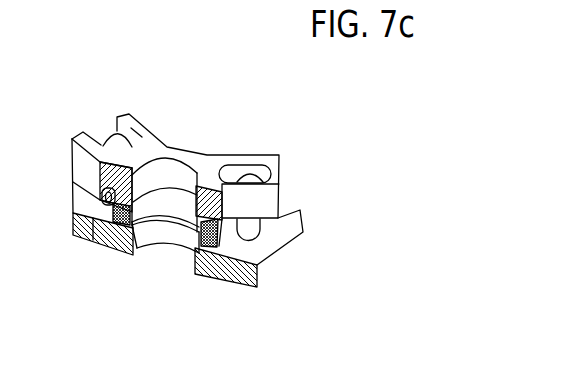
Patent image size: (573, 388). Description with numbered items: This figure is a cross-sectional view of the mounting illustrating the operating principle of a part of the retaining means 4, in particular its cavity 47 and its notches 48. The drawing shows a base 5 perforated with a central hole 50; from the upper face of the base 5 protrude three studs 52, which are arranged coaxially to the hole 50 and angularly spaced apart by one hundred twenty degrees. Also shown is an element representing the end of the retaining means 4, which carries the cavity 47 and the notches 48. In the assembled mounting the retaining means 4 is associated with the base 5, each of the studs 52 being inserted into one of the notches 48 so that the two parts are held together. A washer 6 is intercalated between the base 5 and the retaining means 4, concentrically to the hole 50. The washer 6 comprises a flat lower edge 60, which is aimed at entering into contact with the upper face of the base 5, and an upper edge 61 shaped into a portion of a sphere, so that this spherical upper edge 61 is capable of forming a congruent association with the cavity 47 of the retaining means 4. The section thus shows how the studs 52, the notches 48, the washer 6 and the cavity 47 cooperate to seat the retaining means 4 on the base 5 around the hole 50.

The retaining means 4 is at (197, 112).
The base 5 is at (294, 236).
The washer 6 is at (153, 205).
The cavity 47 is at (136, 251).
The notches 48 is at (258, 168).
The central hole 50 is at (173, 270).
The studs 52 is at (248, 230).
The flat lower edge 60 is at (216, 252).
The upper edge 61 is at (106, 186).